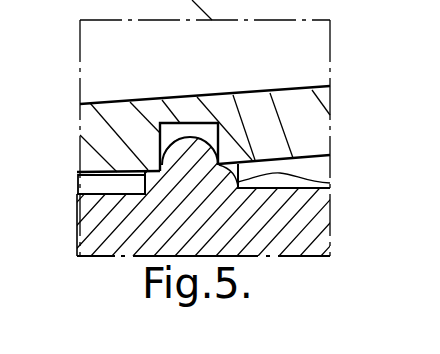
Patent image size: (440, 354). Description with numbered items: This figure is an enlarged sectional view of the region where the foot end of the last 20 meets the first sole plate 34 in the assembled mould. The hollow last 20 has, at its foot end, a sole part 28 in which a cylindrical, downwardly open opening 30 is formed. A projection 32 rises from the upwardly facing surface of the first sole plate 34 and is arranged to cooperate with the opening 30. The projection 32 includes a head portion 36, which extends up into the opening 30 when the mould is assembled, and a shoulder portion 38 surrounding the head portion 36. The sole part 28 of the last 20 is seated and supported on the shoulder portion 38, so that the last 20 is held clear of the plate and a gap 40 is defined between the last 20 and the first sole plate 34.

The last 20 is at (334, 105).
The sole part 28 is at (317, 133).
The cylindrical downwardly open opening 30 is at (173, 134).
The projection 32 is at (167, 178).
The first sole plate 34 is at (320, 250).
The head portion 36 is at (199, 148).
The shoulder portion 38 is at (318, 188).
The gap 40 is at (78, 183).